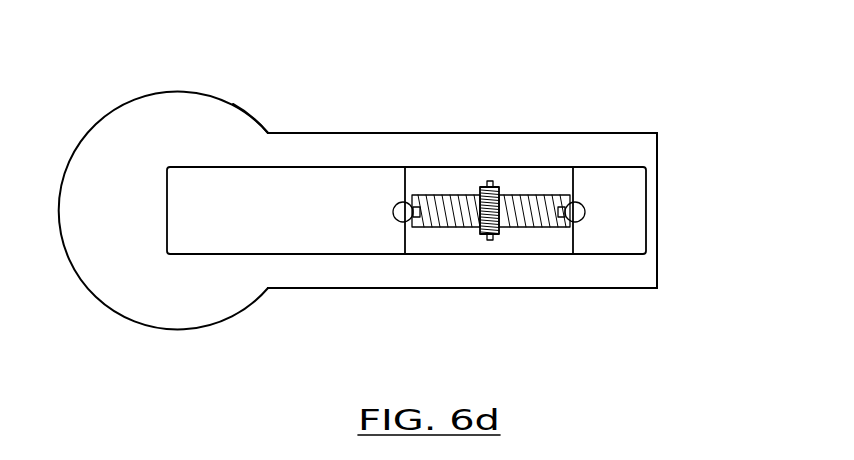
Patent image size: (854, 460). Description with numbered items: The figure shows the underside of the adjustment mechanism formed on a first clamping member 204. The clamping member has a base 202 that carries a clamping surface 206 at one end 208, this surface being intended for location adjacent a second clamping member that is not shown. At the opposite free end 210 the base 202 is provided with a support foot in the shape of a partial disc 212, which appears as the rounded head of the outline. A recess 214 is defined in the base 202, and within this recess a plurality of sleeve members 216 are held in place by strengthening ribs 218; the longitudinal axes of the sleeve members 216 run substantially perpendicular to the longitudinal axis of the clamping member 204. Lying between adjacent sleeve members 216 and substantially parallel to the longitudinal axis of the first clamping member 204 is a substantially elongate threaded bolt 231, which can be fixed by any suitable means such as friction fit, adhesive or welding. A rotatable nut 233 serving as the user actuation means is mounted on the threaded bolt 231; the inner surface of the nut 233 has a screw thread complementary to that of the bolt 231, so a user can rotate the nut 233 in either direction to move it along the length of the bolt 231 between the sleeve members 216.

The base 202 is at (332, 138).
The first clamping member 204 is at (405, 109).
The clamping surface 206 is at (657, 202).
The end 208 is at (640, 133).
The free end 210 is at (233, 104).
The partial disc 212 is at (163, 120).
The recess 214 is at (322, 243).
The sleeve members 216 is at (408, 216).
The strengthening ribs 218 is at (572, 187).
The threaded bolt 231 is at (518, 222).
The rotatable nut 233 is at (500, 187).